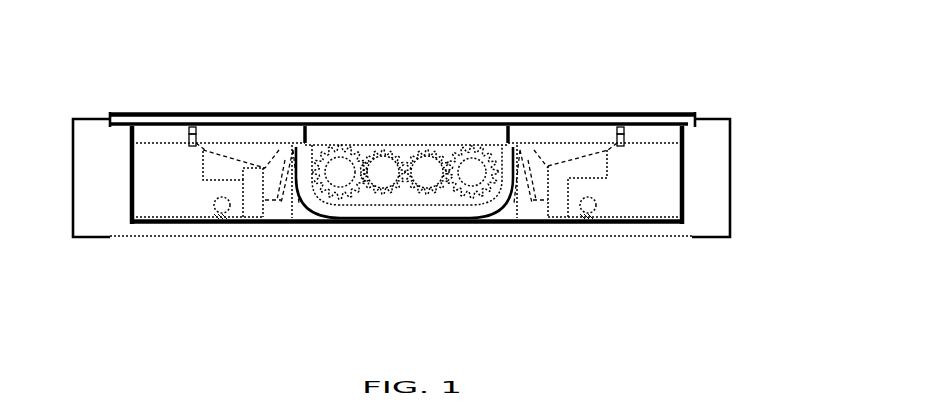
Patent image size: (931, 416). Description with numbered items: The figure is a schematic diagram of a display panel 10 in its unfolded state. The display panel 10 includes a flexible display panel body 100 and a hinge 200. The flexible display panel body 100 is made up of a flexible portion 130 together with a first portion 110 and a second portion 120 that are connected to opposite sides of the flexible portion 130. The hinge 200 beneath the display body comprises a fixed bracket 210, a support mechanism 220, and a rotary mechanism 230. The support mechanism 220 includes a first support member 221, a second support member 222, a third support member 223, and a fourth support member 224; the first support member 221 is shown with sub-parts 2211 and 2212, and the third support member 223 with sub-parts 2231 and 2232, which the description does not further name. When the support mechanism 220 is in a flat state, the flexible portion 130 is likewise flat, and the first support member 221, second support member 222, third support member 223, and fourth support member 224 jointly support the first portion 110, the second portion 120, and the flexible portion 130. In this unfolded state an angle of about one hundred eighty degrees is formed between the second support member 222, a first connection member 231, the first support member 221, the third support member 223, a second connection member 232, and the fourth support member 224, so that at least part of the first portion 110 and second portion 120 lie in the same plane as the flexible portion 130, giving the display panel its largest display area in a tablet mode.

The display panel 10 is at (118, 33).
The flexible display panel body 100 is at (402, 93).
The first portion 110 is at (208, 122).
The second portion 120 is at (555, 122).
The flexible portion 130 is at (385, 122).
The hinge 200 is at (686, 150).
The fixed bracket 210 is at (423, 210).
The support mechanism 220 is at (197, 231).
The first support member 221 is at (197, 231).
The first sliding plate 2211 is at (170, 135).
The first base 2212 is at (195, 193).
The second support member 222 is at (265, 132).
The third support member 223 is at (620, 231).
The second sliding plate 2231 is at (660, 137).
The second base 2232 is at (628, 190).
The fourth support member 224 is at (558, 132).
The rotary mechanism 230 is at (301, 220).
The first connection member 231 is at (283, 160).
The second connection member 232 is at (532, 165).